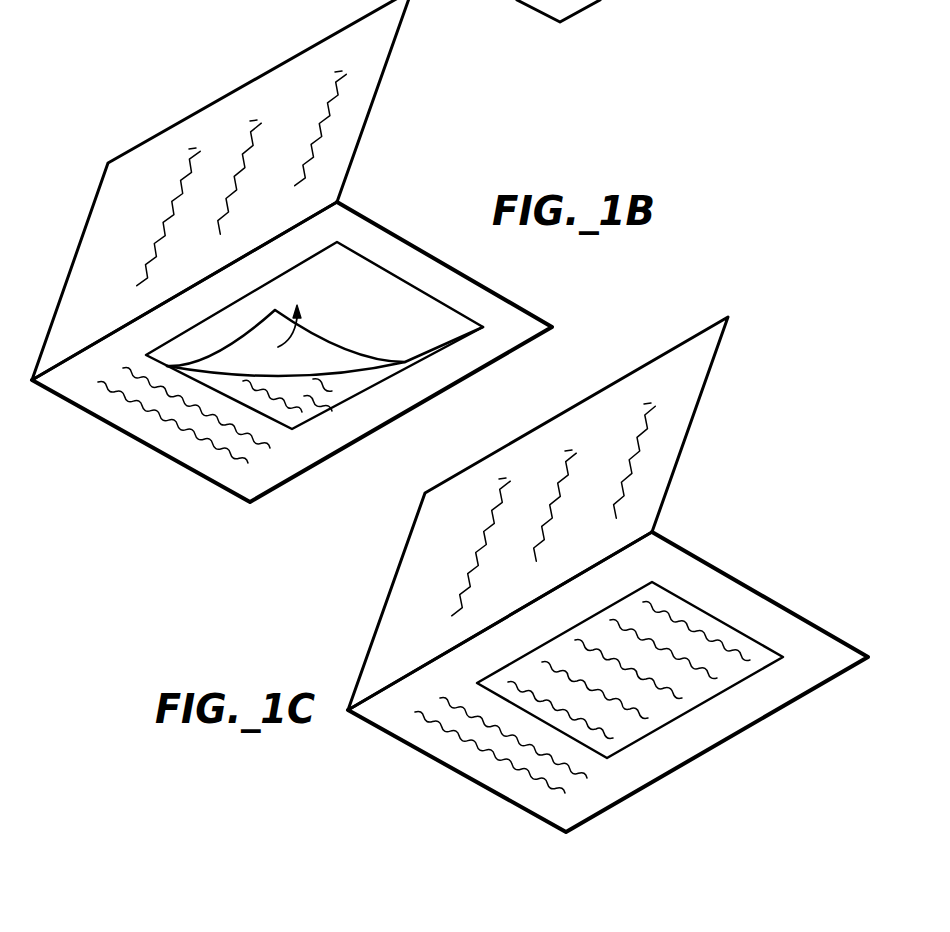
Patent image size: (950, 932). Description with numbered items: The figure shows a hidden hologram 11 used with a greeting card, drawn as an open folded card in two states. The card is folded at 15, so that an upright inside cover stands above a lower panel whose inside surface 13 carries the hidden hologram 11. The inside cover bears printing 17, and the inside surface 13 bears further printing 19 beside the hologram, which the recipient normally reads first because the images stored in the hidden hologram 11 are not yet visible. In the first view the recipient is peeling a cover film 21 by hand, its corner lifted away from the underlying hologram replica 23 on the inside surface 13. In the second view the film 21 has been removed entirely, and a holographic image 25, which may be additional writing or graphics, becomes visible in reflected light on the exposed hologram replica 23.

In FIG. 1B, the hidden hologram 11 is at (377, 299).
In FIG. 1B, the inside surface 13 is at (467, 295).
In FIG. 1C, the inside surface 13 is at (784, 625).
In FIG. 1B, the fold 15 is at (323, 206).
In FIG. 1C, the fold 15 is at (640, 536).
In FIG. 1B, the printing on inside cover 17 is at (323, 108).
In FIG. 1C, the printing on inside cover 17 is at (637, 448).
In FIG. 1B, the printing on surface 19 is at (162, 401).
In FIG. 1C, the printing on surface 19 is at (495, 740).
In FIG. 1B, the cover film 21 is at (330, 360).
In FIG. 1B, the hologram replica 23 is at (308, 397).
In FIG. 1C, the hologram replica 23 is at (687, 688).
In FIG. 1C, the holographic image 25 is at (655, 643).